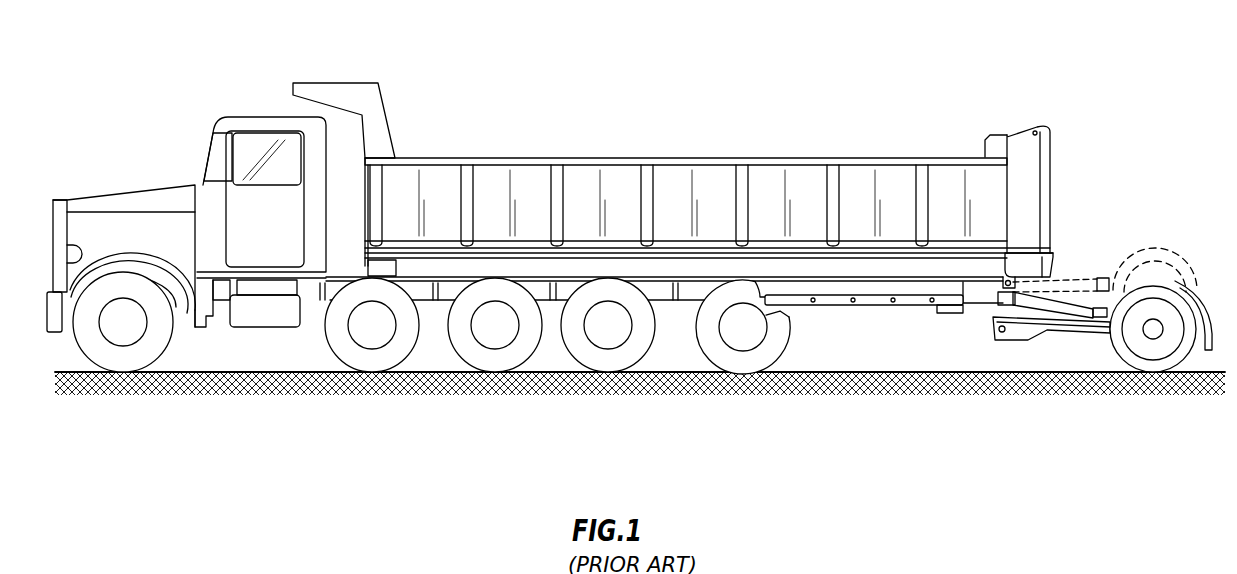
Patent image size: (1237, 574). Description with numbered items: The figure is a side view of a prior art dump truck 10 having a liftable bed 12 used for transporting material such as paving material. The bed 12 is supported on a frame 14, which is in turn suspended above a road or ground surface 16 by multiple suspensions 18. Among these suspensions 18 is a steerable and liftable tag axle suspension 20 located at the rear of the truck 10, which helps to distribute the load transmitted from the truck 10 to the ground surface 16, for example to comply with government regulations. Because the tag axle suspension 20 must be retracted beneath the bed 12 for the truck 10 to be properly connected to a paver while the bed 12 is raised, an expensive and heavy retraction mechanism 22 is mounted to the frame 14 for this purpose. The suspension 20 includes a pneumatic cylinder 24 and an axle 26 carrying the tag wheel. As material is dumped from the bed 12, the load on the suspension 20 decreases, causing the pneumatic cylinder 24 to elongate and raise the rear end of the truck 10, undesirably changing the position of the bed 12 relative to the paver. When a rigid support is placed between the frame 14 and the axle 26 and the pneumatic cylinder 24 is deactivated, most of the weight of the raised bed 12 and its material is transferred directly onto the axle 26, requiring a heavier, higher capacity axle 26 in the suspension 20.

The dump truck 10 is at (141, 112).
The liftable bed 12 is at (668, 157).
The frame 14 is at (435, 300).
The ground surface 16 is at (257, 372).
The suspensions 18 is at (666, 330).
The tag axle suspension 20 is at (1059, 342).
The retraction mechanism 22 is at (943, 313).
The pneumatic cylinder 24 is at (1055, 293).
The axle 26 is at (1148, 333).